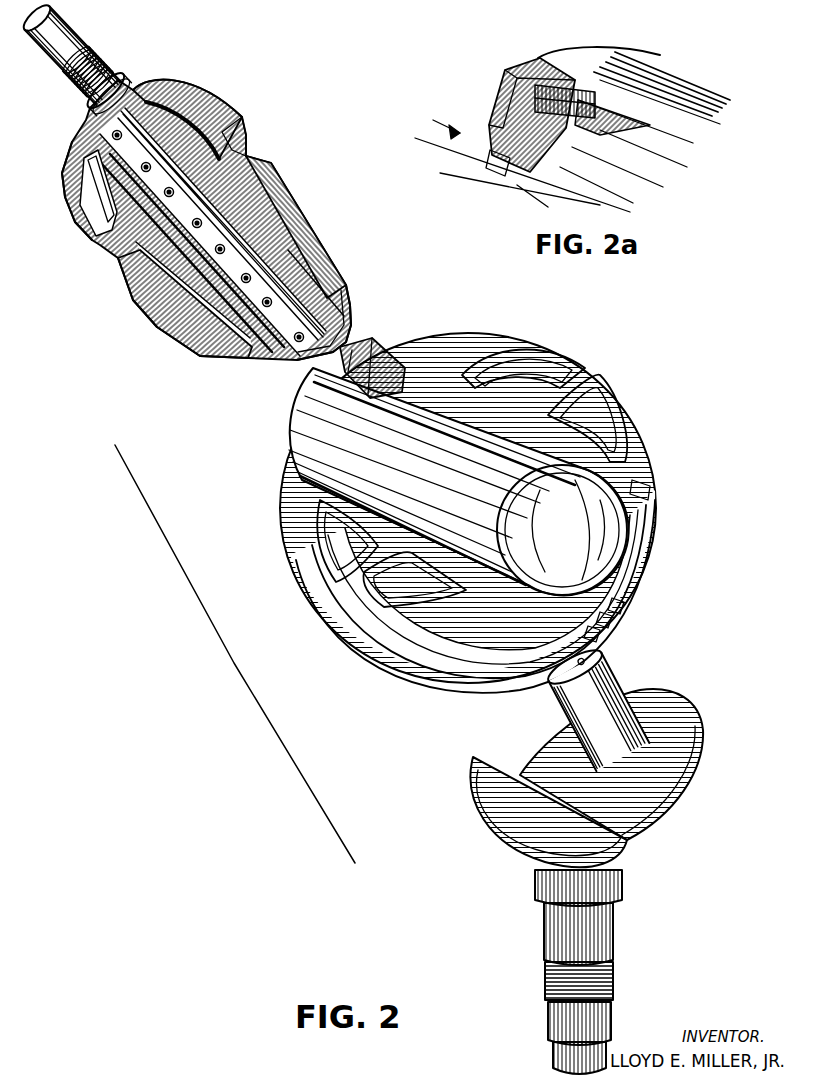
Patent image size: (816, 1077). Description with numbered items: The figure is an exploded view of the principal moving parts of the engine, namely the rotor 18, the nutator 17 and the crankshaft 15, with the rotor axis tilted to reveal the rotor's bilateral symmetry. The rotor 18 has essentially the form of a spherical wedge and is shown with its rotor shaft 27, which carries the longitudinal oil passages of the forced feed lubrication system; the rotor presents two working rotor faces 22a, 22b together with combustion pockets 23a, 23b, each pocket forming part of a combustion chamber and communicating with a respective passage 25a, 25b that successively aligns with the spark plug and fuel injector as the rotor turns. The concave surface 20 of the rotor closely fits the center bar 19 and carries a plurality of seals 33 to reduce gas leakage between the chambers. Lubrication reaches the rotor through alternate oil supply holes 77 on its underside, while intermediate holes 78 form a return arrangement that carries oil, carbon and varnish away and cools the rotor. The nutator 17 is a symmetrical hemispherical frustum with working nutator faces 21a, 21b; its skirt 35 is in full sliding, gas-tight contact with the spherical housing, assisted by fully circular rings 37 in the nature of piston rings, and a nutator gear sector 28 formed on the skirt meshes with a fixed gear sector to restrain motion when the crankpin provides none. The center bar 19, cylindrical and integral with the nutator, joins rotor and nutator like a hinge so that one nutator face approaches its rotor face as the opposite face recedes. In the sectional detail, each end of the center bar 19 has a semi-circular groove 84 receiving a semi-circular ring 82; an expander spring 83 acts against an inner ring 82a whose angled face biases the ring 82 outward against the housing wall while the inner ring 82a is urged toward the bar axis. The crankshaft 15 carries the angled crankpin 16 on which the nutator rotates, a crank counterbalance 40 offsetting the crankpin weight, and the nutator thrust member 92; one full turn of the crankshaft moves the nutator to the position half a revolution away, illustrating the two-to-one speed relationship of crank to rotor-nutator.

In FIG. 2, the shaft 27 is at (74, 36).
In FIG. 2, the seals 33 is at (116, 94).
In FIG. 2, the rotor 18 is at (205, 78).
In FIG. 2, the holes 78 is at (200, 220).
In FIG. 2, the passage 25b is at (244, 148).
In FIG. 2, the oil supply holes 77 is at (112, 204).
In FIG. 2, the combustion pocket 23b is at (300, 216).
In FIG. 2, the rotor face 22b is at (326, 288).
In FIG. 2, the concave surface 20 is at (347, 344).
In FIG. 2, the combustion pocket 23a is at (112, 245).
In FIG. 2, the passage 25a is at (136, 272).
In FIG. 2, the rotor face 22a is at (176, 320).
In FIG. 2, the semi-circular ring 82 is at (346, 350).
In FIG. 2a, the semi-circular ring 82 is at (492, 96).
In FIG. 2, the nutator face 21b is at (605, 361).
In FIG. 2, the center bar 19 is at (310, 435).
In FIG. 2a, the center bar 19 is at (582, 56).
In FIG. 2, the nutator skirt 35 is at (656, 520).
In FIG. 2, the nutator face 21a is at (300, 518).
In FIG. 2, the nutator 17 is at (292, 565).
In FIG. 2, the nutator gear sector 28 is at (606, 634).
In FIG. 2, the rings 37 is at (397, 644).
In FIG. 2, the crankpin 16 is at (608, 670).
In FIG. 2, the nutator thrust member 92 is at (690, 720).
In FIG. 2, the crank counterbalance 40 is at (480, 800).
In FIG. 2, the crankshaft 15 is at (626, 905).
In FIG. 2a, the semi-circular groove 84 is at (586, 104).
In FIG. 2a, the expander spring 83 is at (580, 128).
In FIG. 2a, the inner ring 82a is at (505, 146).